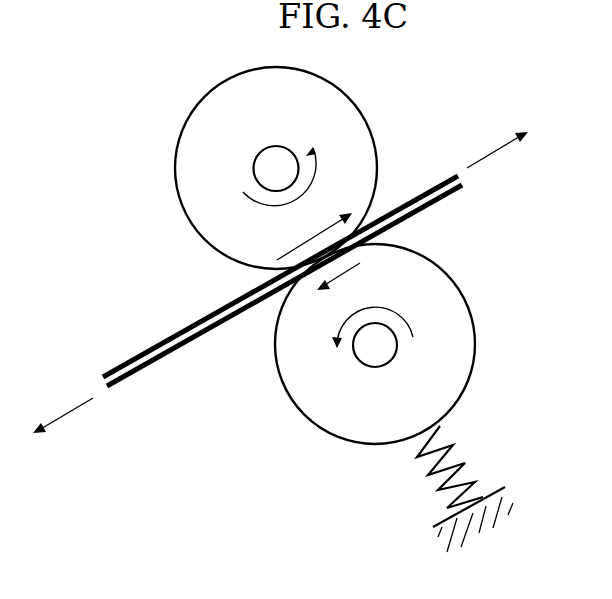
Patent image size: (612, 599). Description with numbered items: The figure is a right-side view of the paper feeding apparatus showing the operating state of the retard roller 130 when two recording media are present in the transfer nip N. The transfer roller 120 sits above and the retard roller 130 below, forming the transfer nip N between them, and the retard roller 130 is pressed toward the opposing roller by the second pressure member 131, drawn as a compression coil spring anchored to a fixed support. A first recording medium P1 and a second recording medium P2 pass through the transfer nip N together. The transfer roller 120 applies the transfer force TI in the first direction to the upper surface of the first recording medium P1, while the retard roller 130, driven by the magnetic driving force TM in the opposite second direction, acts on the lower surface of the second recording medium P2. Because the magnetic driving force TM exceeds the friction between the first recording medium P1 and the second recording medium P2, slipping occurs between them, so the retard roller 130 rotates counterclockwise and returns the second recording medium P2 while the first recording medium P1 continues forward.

The transfer roller 120 is at (188, 153).
The retard roller 130 is at (302, 400).
The second pressure member 131 is at (472, 478).
The transfer nip N is at (347, 258).
The first recording medium P1 is at (123, 367).
The second recording medium P2 is at (137, 377).
The transfer force of the first direction TI is at (314, 223).
The magnetic driving force TM is at (332, 289).